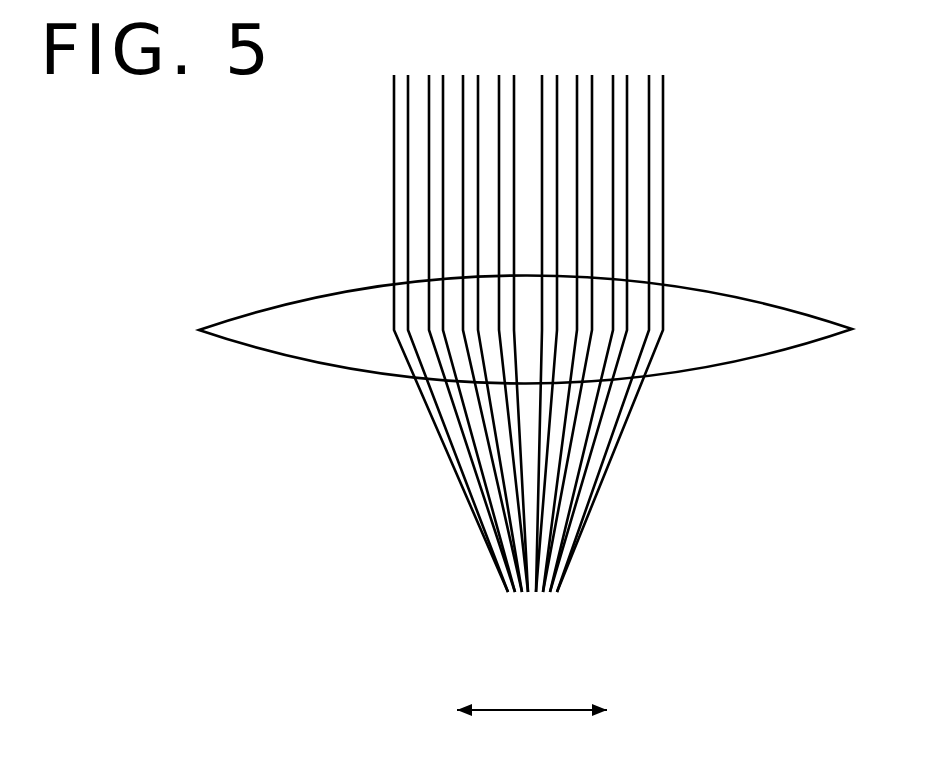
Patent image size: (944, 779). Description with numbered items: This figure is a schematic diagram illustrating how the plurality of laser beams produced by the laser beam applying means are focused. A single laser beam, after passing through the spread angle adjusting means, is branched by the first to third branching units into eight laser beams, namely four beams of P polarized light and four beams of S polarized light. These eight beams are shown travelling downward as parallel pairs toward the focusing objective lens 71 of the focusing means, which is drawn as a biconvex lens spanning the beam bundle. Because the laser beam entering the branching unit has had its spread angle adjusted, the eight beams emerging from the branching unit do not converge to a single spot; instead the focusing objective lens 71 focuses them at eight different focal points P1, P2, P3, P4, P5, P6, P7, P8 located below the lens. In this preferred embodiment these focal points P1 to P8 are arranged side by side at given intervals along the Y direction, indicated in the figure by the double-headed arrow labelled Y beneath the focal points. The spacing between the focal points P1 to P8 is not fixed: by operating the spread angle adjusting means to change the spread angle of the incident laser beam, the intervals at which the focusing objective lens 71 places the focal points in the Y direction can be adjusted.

The focusing objective lens 71 is at (785, 307).
The focal point P1 is at (508, 592).
The focal point P2 is at (515, 592).
The focal point P3 is at (522, 592).
The focal point P4 is at (528, 592).
The focal point P5 is at (536, 592).
The focal point P6 is at (543, 592).
The focal point P7 is at (550, 592).
The focal point P8 is at (557, 592).
The Y direction Y is at (532, 726).